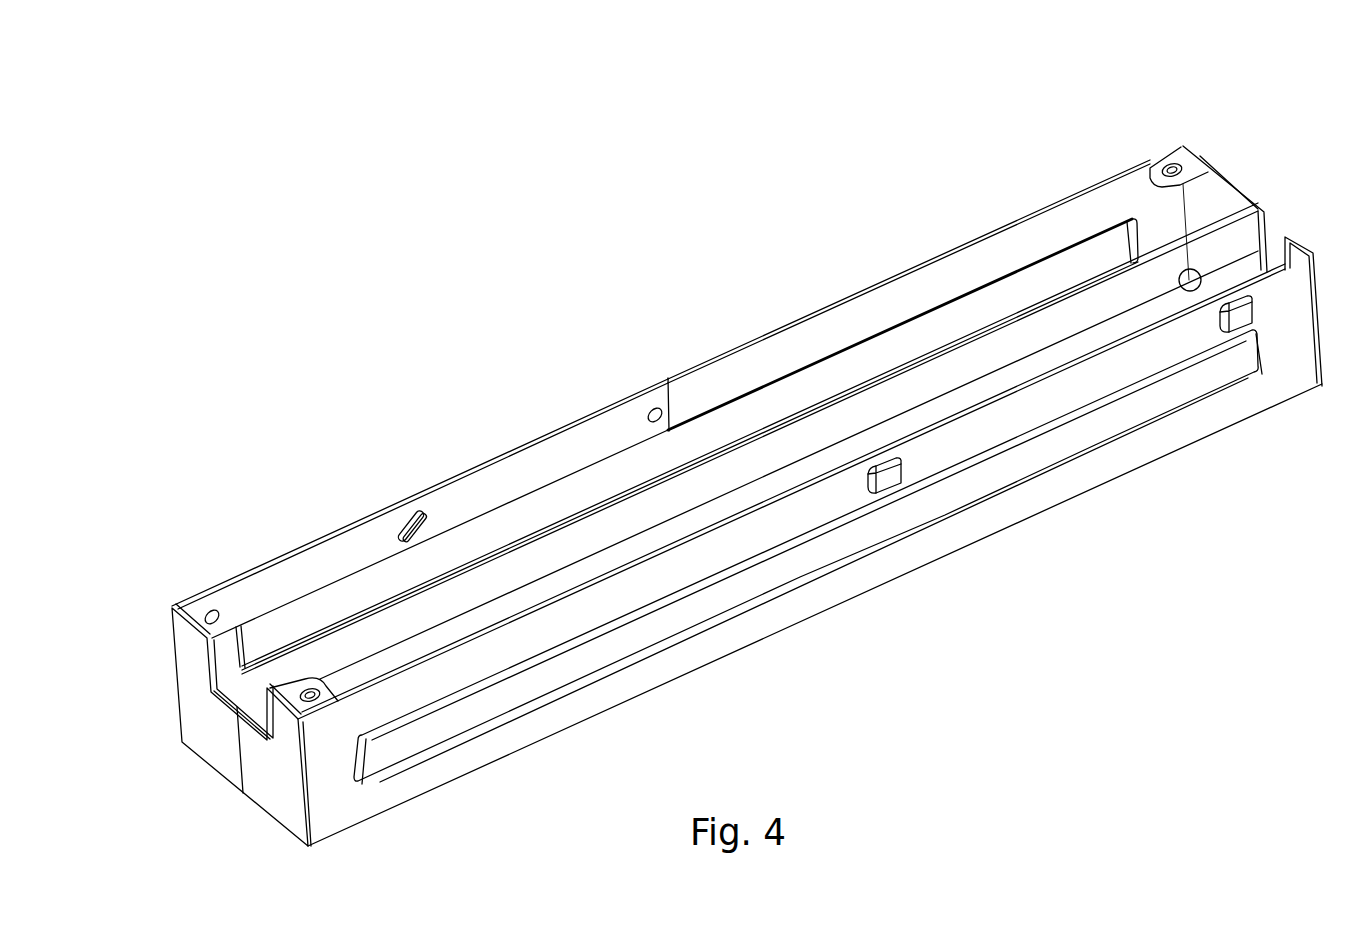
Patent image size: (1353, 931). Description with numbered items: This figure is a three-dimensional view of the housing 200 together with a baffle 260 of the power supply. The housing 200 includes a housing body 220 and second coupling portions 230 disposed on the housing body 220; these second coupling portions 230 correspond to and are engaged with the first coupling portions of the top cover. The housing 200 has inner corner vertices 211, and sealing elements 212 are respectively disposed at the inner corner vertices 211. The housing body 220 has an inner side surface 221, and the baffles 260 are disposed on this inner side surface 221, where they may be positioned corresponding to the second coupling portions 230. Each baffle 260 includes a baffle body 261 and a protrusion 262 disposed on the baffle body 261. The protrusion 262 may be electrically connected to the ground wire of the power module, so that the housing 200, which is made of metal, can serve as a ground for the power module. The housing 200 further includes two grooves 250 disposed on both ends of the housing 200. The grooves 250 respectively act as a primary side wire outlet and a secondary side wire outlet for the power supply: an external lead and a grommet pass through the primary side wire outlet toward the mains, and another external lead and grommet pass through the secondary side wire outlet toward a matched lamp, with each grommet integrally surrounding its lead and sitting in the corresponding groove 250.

The housing 200 is at (860, 70).
The inner corner vertices 211 is at (1185, 270).
The sealing elements 212 is at (1203, 292).
The housing body 220 is at (953, 250).
The inner side surface 221 is at (903, 305).
The second coupling portions 230 is at (890, 465).
The grooves 250 is at (240, 707).
The baffle 260 is at (476, 348).
The baffle body 261 is at (457, 505).
The protrusion 262 is at (410, 522).